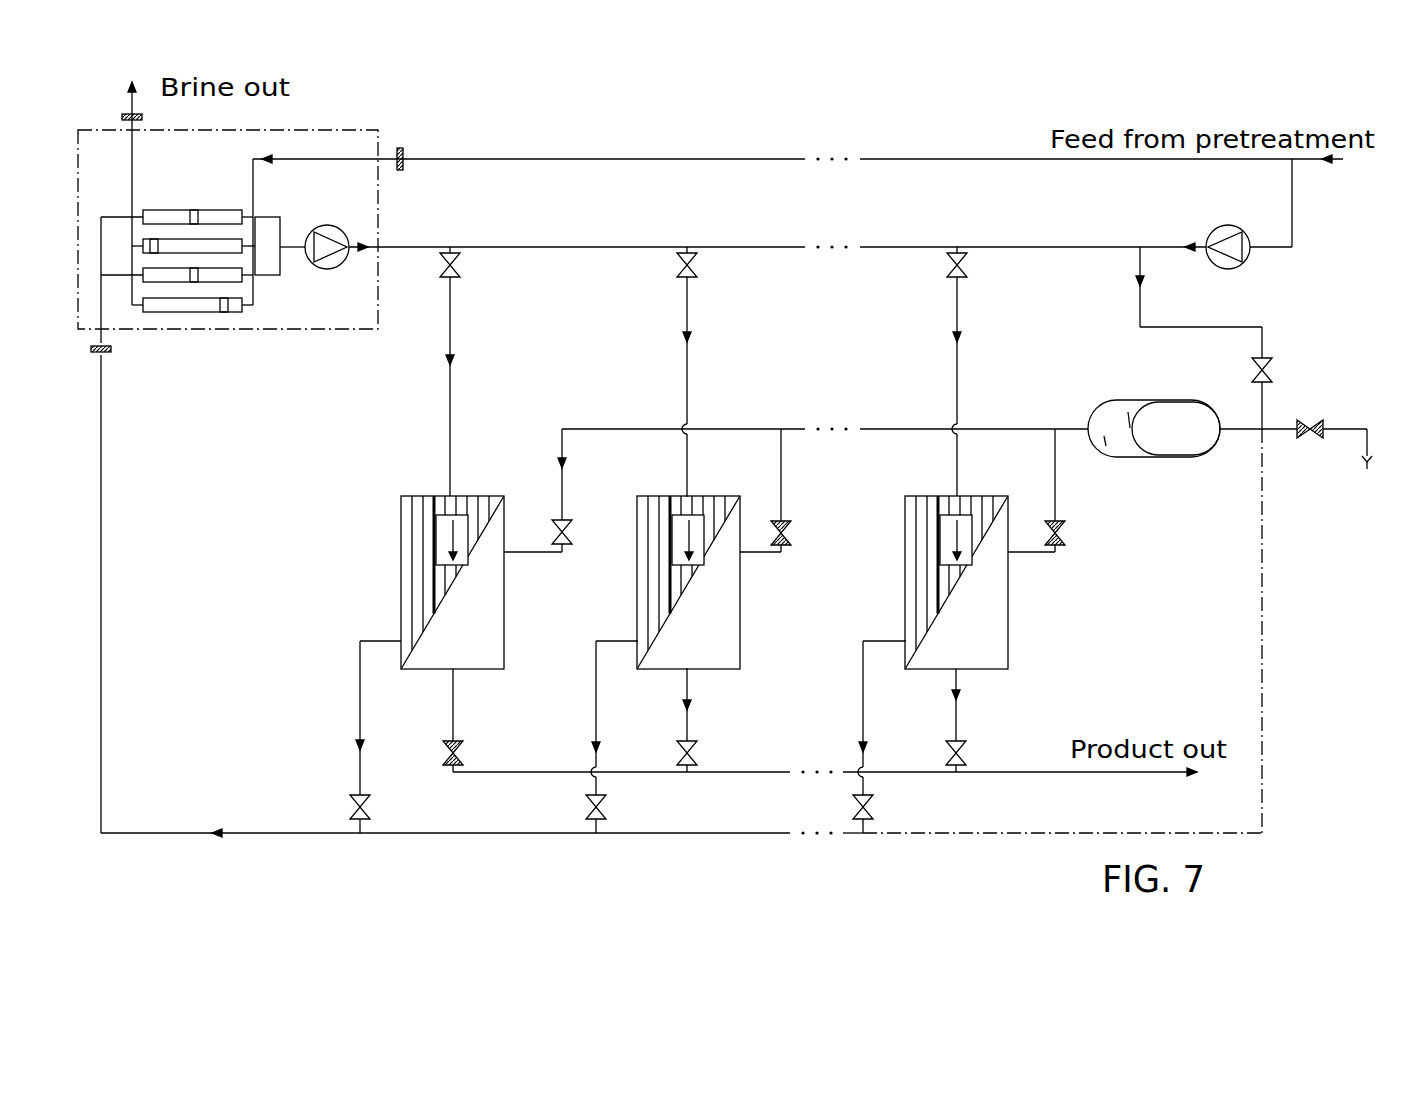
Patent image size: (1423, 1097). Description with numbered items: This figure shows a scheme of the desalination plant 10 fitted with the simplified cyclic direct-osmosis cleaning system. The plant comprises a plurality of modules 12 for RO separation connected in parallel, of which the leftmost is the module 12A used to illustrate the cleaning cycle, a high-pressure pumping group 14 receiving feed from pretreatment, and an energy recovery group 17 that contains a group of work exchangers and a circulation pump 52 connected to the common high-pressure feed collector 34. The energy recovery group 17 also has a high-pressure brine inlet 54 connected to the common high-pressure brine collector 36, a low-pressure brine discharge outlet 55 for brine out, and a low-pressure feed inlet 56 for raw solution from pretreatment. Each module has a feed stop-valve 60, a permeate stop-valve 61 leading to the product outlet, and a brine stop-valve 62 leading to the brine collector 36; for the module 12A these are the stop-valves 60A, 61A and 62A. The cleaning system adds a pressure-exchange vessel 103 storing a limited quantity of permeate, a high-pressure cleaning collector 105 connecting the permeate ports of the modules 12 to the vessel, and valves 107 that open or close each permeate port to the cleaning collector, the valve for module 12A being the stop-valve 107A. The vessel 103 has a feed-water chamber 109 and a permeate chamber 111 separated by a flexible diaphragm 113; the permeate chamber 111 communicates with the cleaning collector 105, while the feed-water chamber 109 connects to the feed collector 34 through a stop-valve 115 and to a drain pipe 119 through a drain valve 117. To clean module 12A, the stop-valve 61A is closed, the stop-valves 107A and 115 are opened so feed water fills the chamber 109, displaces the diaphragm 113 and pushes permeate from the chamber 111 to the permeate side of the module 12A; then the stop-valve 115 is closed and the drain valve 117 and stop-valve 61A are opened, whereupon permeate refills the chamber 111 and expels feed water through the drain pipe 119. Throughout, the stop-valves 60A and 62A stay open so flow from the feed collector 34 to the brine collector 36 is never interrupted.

The desalination plant 10 is at (860, 112).
The module for RO separation 12 is at (740, 645).
The RO module 12A is at (401, 601).
The high-pressure pumping group 14 is at (1240, 230).
The energy recovery group 17 is at (376, 130).
The common high-pressure feed collector 34 is at (585, 246).
The common high-pressure brine collector 36 is at (158, 832).
The circulation pump 52 is at (340, 266).
The high-pressure brine inlet 54 is at (108, 354).
The low-pressure brine discharge outlet 55 is at (122, 116).
The low-pressure feed inlet 56 is at (400, 172).
The valve 60 is at (697, 263).
The stop-valve 60A is at (462, 263).
The valve 61 is at (698, 752).
The stop-valve 61A is at (463, 753).
The valve 62 is at (606, 807).
The stop-valve 62A is at (370, 807).
The pressure-exchange vessel 103 is at (1186, 400).
The high-pressure cleaning collector 105 is at (726, 428).
The valve 107 is at (791, 536).
The stop-valve 107A is at (571, 536).
The feed-water chamber 109 is at (1168, 437).
The permeate chamber 111 is at (1106, 437).
The flexible diaphragm 113 is at (1132, 428).
The stop-valve 115 is at (1273, 365).
The drain valve 117 is at (1305, 441).
The drain pipe 119 is at (1374, 466).